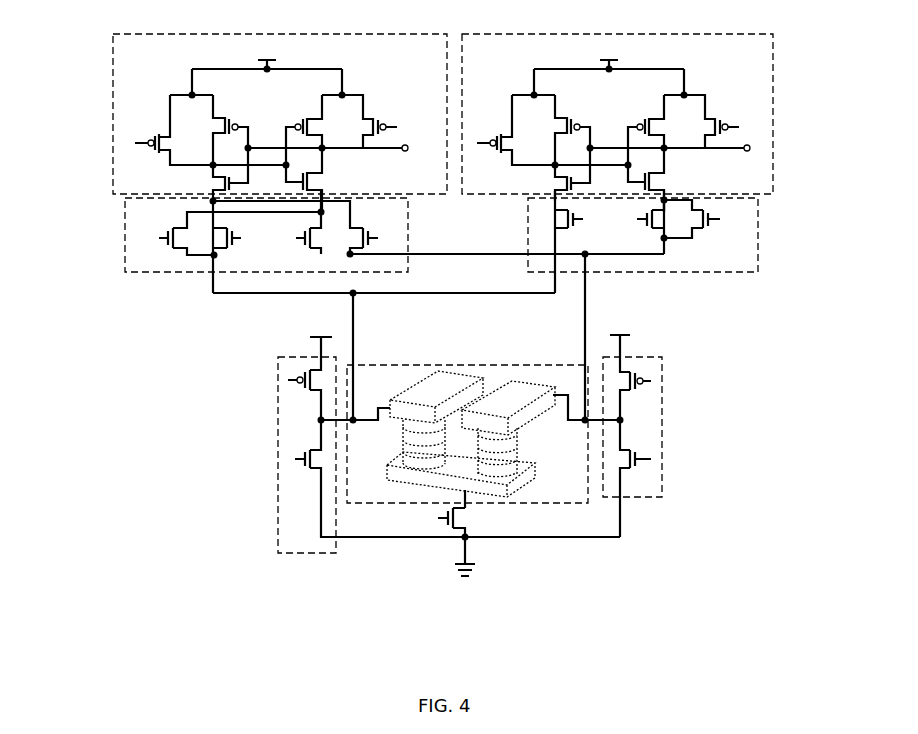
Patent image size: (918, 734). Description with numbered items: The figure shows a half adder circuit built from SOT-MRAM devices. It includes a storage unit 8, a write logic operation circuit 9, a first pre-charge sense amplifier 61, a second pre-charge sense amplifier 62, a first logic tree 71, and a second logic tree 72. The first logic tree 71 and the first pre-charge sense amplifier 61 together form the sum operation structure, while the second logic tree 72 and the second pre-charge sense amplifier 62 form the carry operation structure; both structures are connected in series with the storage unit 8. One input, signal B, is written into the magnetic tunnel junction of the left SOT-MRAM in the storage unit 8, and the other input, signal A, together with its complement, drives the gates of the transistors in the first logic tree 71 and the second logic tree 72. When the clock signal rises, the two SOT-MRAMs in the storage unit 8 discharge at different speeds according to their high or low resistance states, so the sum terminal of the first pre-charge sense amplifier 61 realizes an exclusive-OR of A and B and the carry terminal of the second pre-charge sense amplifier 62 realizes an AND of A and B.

The first pre-charge sense amplifier 61 is at (133, 78).
The second pre-charge sense amplifier 62 is at (760, 72).
The first logic tree 71 is at (140, 260).
The second logic tree 72 is at (743, 250).
The storage unit 8 is at (405, 372).
The write logic operation circuit 9 is at (607, 492).